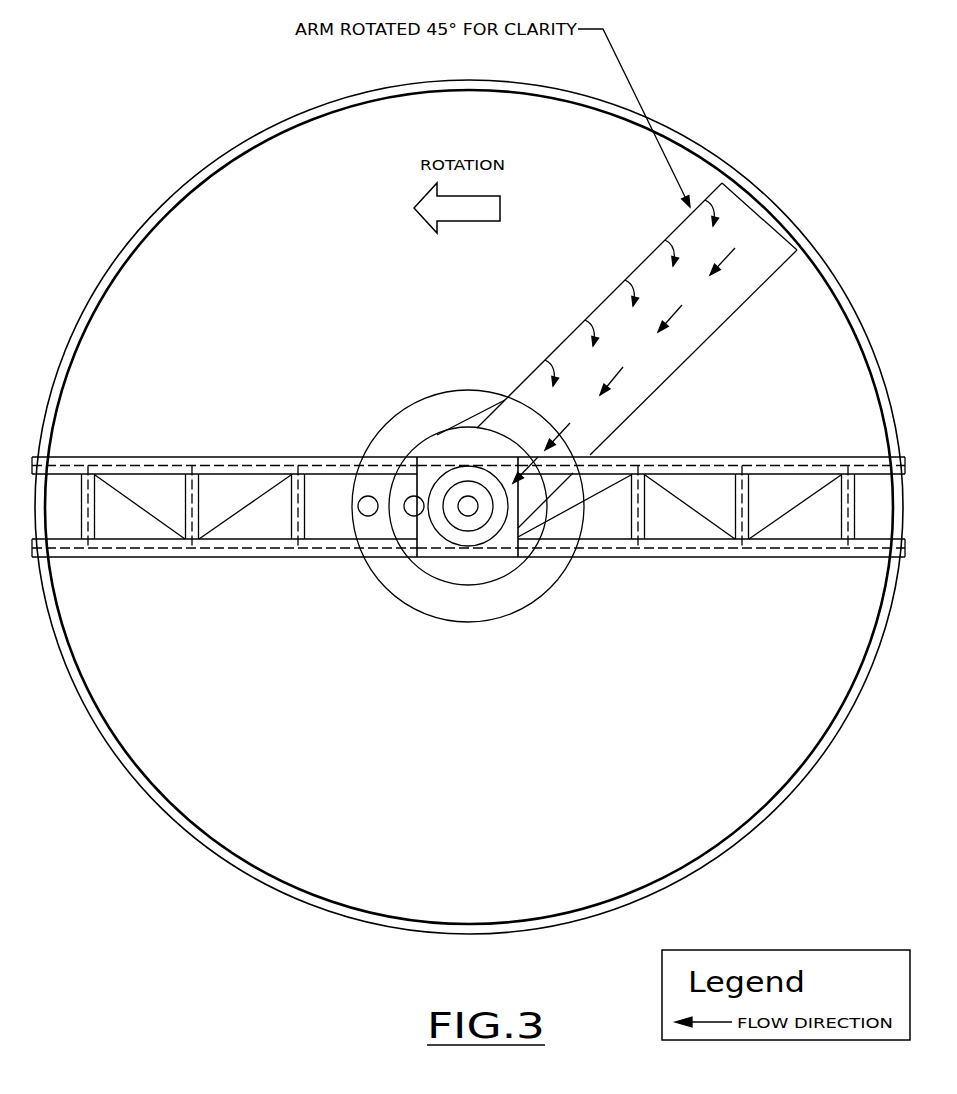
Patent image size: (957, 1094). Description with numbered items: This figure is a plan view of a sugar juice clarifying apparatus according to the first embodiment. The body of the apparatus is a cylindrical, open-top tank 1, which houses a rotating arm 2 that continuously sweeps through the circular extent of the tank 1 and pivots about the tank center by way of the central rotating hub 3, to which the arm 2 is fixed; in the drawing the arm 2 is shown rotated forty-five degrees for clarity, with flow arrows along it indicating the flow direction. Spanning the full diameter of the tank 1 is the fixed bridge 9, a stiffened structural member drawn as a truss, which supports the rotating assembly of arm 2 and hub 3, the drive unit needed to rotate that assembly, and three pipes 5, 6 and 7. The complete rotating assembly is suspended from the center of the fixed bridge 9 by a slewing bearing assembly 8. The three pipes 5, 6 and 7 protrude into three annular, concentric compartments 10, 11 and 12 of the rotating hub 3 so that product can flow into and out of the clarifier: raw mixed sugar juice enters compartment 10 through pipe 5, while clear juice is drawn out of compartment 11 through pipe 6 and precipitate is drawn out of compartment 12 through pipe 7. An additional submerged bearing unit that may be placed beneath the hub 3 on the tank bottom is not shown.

The tank 1 is at (725, 158).
The rotating arm 2 is at (755, 198).
The central rotating hub 3 is at (362, 443).
The pipe 5 is at (368, 518).
The pipe 6 is at (414, 518).
The pipe 7 is at (467, 518).
The slewing bearing assembly 8 is at (441, 471).
The fixed bridge 9 is at (745, 453).
The compartment 10 is at (463, 602).
The compartment 11 is at (493, 588).
The compartment 12 is at (502, 568).